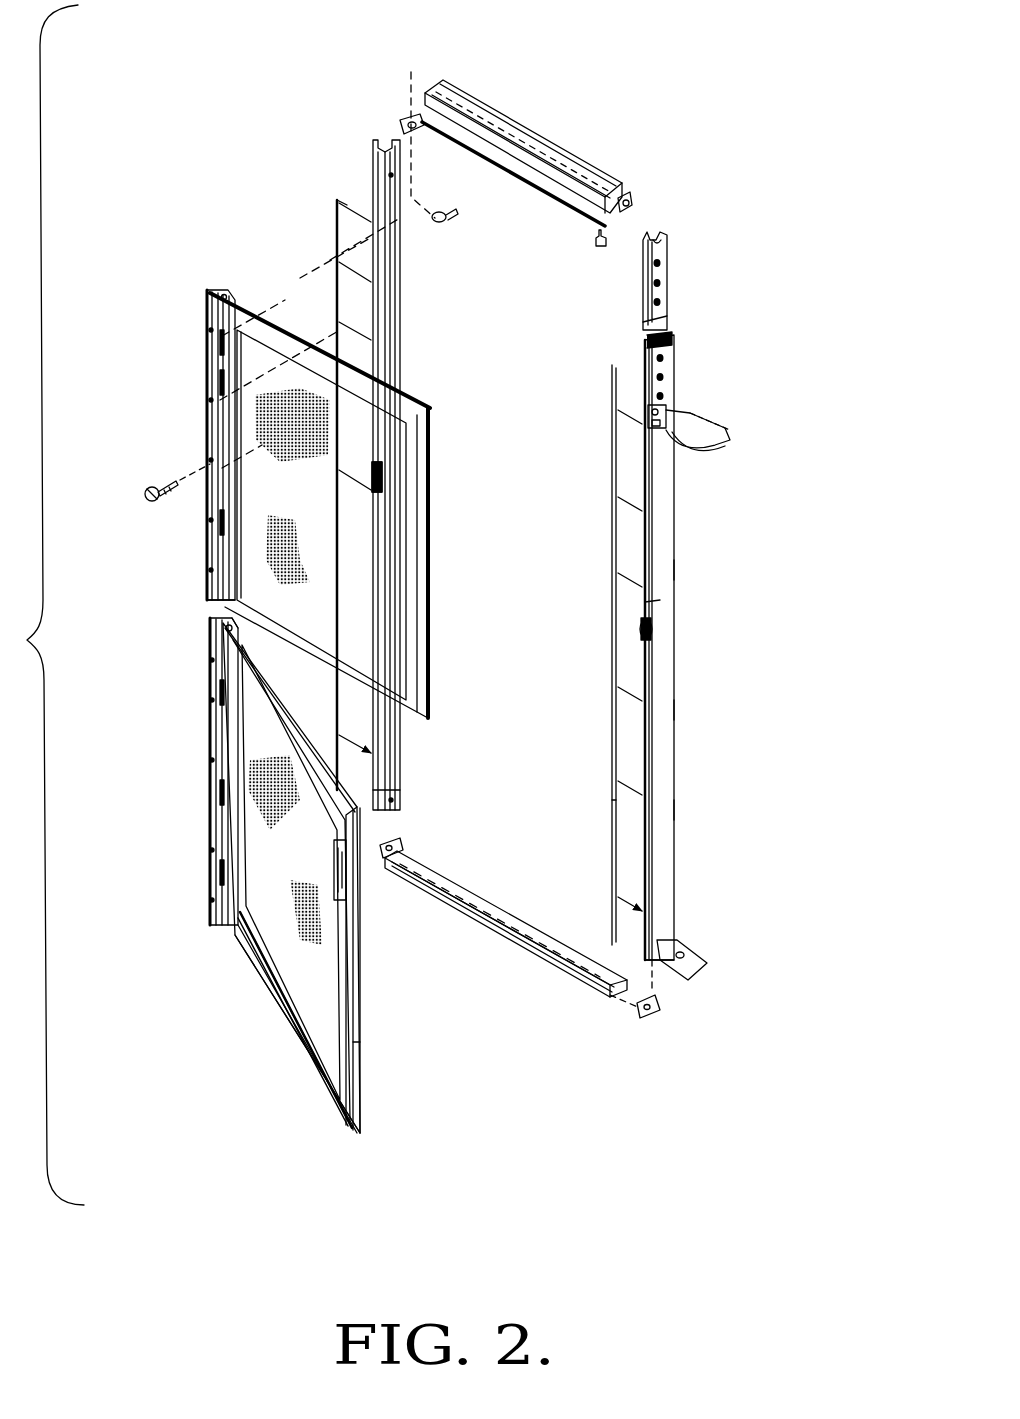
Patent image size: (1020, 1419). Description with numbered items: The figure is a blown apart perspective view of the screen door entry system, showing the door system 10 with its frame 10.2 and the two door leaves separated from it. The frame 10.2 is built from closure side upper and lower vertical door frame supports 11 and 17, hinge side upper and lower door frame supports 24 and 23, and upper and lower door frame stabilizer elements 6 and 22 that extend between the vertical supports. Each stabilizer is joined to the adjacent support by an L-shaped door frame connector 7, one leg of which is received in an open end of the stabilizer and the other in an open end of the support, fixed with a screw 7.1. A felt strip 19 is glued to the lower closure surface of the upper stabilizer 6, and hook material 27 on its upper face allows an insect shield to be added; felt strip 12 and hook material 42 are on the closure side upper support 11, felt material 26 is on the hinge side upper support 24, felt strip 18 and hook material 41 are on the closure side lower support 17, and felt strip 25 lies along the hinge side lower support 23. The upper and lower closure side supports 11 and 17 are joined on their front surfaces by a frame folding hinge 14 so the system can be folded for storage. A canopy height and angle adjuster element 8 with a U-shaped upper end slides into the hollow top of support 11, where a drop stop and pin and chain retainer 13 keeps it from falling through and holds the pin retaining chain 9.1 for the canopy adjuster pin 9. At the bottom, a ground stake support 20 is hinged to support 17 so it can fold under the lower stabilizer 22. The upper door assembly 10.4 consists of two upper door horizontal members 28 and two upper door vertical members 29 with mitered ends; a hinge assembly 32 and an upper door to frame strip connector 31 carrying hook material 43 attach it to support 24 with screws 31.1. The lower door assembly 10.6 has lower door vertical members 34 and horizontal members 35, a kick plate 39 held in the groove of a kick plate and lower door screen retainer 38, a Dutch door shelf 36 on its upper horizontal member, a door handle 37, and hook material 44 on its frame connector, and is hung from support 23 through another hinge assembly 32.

The upper door frame stabilizer element 6 is at (530, 136).
The L-shaped door frame connector 7 is at (400, 122).
The screw 7.1 is at (445, 225).
The canopy height and angle adjuster element 8 is at (670, 272).
The canopy adjuster pin 9 is at (718, 418).
The canopy adjuster element pin retaining chain 9.1 is at (735, 446).
The door system 10 is at (728, 741).
The frame 10.2 is at (678, 517).
The upper door assembly 10.4 is at (433, 478).
The lower door assembly 10.6 is at (366, 1012).
The closure side upper vertical door frame support 11 is at (676, 566).
The felt strip 12 is at (610, 386).
The drop stop and pin and chain retainer 13 is at (650, 402).
The frame folding hinge 14 is at (652, 628).
The closure side lower vertical door frame support 17 is at (676, 706).
The felt strip 18 is at (610, 800).
The felt strip 19 is at (513, 186).
The ground stake support 20 is at (700, 951).
The lower door frame stabilizer element 22 is at (590, 1010).
The hinge side lower door frame support 23 is at (405, 762).
The hinge side upper door frame support 24 is at (405, 320).
The felt strip 25 is at (337, 617).
The felt material 26 is at (336, 307).
The hook material 27 is at (445, 100).
The upper door horizontal member 28 is at (420, 408).
The upper door vertical member 29 is at (248, 470).
The upper door to frame strip connector 31 is at (210, 292).
The screw 31.1 is at (146, 488).
The hinge assembly 32 is at (216, 369).
The lower door vertical member 34 is at (232, 678).
The lower door horizontal member 35 is at (300, 1070).
The Dutch door shelf 36 is at (287, 714).
The door handle 37 is at (356, 905).
The kick plate and lower door screen retainer 38 is at (315, 1014).
The kick plate 39 is at (275, 968).
The hook material 41 is at (676, 805).
The hook material 42 is at (652, 602).
The hook material 43 is at (216, 425).
The hook material 44 is at (214, 754).